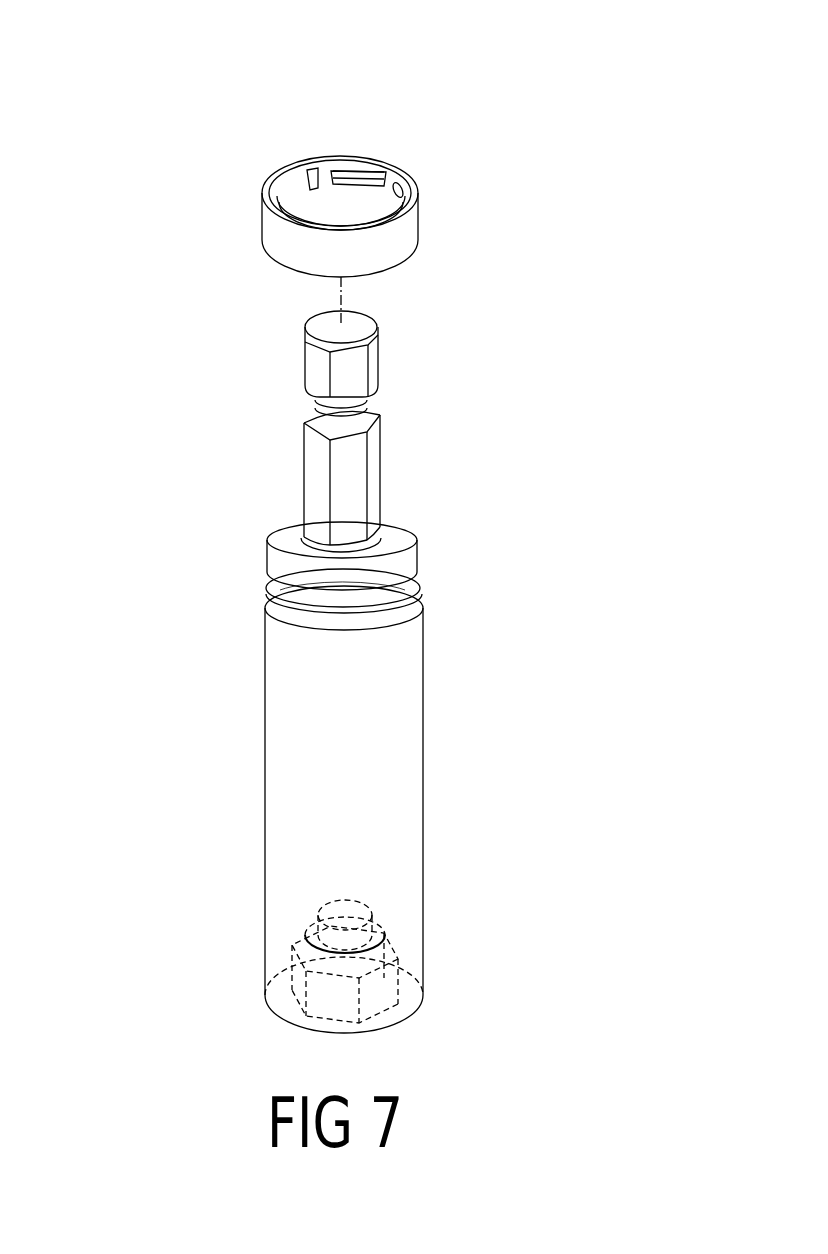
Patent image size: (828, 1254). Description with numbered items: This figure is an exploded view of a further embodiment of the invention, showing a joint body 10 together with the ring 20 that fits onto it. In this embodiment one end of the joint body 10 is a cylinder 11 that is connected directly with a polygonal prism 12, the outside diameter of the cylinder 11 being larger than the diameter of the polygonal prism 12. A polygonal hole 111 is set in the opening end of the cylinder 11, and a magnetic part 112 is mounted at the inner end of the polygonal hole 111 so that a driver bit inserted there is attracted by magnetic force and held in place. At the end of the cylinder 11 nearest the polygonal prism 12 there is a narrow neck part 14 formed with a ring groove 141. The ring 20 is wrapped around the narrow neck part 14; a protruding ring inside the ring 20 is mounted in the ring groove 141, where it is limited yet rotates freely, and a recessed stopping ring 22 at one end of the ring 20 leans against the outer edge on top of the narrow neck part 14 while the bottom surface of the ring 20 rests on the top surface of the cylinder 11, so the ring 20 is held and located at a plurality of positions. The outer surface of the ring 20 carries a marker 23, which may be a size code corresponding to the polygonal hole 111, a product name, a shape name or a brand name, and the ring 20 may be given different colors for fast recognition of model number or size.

The joint body 10 is at (257, 833).
The cylinder 11 is at (382, 793).
The polygonal hole 111 is at (363, 987).
The magnetic part 112 is at (330, 970).
The polygonal prism 12 is at (352, 380).
The narrow neck part 14 is at (388, 612).
The ring groove 141 is at (313, 598).
The ring 20 is at (410, 230).
The recessed stopping ring 22 is at (410, 180).
The marker 23 is at (275, 247).